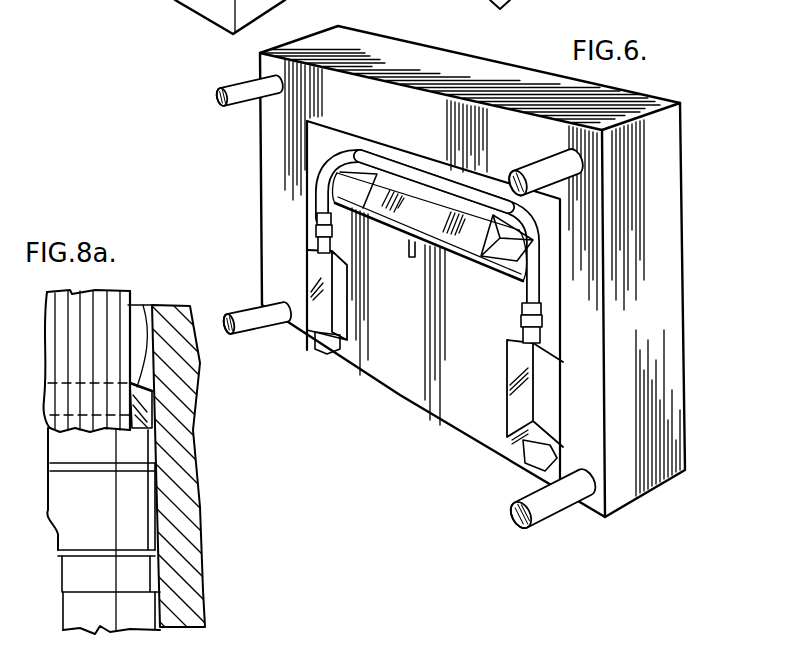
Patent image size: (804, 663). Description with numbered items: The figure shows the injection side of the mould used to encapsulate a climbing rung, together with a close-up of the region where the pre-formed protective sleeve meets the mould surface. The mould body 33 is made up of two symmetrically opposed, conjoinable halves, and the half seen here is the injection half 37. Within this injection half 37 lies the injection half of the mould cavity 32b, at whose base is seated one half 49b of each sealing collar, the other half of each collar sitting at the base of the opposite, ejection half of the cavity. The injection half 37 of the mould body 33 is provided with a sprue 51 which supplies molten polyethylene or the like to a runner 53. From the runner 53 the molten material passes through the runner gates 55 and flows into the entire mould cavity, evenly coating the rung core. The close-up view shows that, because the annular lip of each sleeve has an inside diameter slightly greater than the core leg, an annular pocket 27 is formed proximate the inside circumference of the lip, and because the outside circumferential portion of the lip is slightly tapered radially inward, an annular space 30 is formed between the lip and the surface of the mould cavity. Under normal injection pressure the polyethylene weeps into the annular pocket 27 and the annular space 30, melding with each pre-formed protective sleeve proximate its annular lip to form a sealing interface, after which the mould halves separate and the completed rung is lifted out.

In FIG. 6, the mould body 33 is at (213, 22).
In FIG. 6, the injection half 37 is at (685, 243).
In FIG. 6, the injection half of the mould cavity 32b is at (418, 165).
In FIG. 6, the runner gates 55 is at (316, 193).
In FIG. 6, the sealing collar half 49b is at (316, 234).
In FIG. 6, the sprue 51 is at (411, 256).
In FIG. 6, the runner 53 is at (478, 262).
In FIG. 8A, the annular pocket 27 is at (144, 305).
In FIG. 8A, the annular space 30 is at (178, 400).